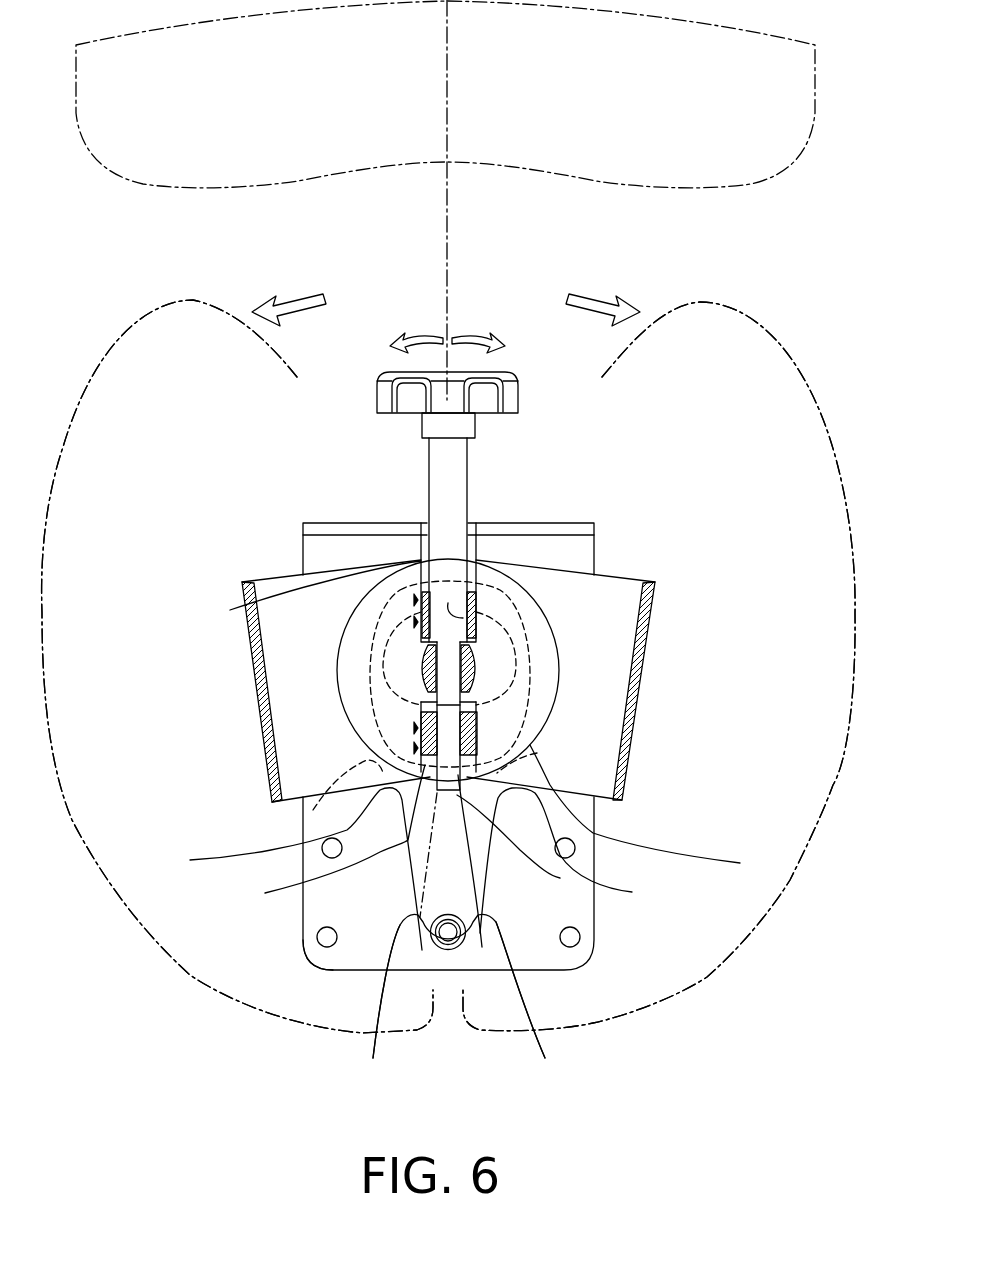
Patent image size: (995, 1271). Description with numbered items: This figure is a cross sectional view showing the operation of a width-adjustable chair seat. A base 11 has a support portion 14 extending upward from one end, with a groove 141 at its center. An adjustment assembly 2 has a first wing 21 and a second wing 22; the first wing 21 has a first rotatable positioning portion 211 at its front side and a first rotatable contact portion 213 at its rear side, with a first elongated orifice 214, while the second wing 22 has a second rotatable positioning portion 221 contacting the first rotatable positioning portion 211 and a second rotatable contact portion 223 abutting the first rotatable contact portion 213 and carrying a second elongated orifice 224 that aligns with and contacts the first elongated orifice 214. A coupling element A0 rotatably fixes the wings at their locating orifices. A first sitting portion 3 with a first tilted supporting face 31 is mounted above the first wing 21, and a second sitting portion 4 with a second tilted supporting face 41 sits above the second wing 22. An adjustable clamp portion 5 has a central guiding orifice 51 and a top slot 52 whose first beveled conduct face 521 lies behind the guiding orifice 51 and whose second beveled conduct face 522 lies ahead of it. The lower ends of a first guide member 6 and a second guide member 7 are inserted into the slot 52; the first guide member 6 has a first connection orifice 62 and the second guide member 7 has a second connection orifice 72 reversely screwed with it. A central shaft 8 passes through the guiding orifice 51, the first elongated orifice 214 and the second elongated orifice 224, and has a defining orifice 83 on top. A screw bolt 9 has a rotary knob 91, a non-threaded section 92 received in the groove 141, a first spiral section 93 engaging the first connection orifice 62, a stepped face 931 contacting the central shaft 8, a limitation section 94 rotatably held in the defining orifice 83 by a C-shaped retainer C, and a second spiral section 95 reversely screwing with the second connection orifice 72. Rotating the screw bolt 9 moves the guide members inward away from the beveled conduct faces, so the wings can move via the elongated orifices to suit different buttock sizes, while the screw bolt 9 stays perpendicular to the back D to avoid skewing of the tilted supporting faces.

The adjustment assembly 2 is at (412, 895).
The first sitting portion 3 is at (165, 312).
The first tilted supporting face 31 is at (237, 666).
The second sitting portion 4 is at (777, 330).
The second tilted supporting face 41 is at (659, 666).
The adjustable clamp portion 5 is at (620, 843).
The first guide member 6 is at (477, 562).
The second guide member 7 is at (265, 855).
The central shaft 8 is at (477, 690).
The screw bolt 9 is at (517, 370).
The rotary knob 91 is at (385, 378).
The non-threaded section 92 is at (458, 470).
The first spiral section 93 is at (477, 591).
The stepped face 931 is at (421, 641).
The limitation section 94 is at (421, 694).
The second spiral section 95 is at (497, 920).
The base 11 is at (360, 953).
The support portion 14 is at (592, 528).
The groove 141 is at (470, 531).
The first wing 21 is at (265, 778).
The second wing 22 is at (632, 775).
The first rotatable positioning portion 211 is at (375, 1014).
The second rotatable positioning portion 221 is at (531, 1013).
The first rotatable contact portion 213 is at (537, 753).
The second rotatable contact portion 223 is at (313, 810).
The first elongated orifice 214 is at (530, 637).
The second elongated orifice 224 is at (400, 652).
The guiding orifice 51 is at (477, 622).
The slot 52 is at (477, 748).
The first beveled conduct face 521 is at (417, 561).
The second beveled conduct face 522 is at (347, 870).
The first connection orifice 62 is at (432, 603).
The second connection orifice 72 is at (585, 885).
The defining orifice 83 is at (477, 721).
The coupling element A0 is at (447, 950).
The C-shaped retainer C is at (421, 712).
The back D is at (318, 153).